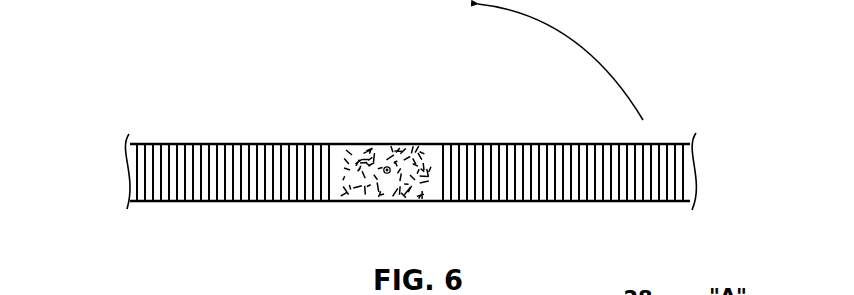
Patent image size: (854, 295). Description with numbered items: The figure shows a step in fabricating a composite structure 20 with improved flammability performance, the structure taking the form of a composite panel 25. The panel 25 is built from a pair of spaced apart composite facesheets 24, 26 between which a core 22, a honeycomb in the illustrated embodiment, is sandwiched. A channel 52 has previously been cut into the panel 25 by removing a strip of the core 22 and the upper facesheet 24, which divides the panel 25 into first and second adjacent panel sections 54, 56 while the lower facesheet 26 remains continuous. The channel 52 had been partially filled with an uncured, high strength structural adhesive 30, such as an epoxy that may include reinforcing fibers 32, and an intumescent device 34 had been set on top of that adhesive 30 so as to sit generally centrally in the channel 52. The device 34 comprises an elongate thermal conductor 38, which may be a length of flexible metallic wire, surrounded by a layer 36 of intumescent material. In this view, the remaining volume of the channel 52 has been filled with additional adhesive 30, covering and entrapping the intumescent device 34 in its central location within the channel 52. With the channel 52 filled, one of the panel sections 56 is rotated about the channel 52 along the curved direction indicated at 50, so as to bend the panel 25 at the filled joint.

The composite structure 20 is at (150, 126).
The core 22 is at (225, 172).
The composite facesheet 24 is at (497, 143).
The composite panel 25 is at (680, 77).
The composite facesheet 26 is at (594, 200).
The adhesive 30 is at (415, 185).
The reinforcing fibers 32 is at (357, 186).
The intumescent device 34 is at (384, 163).
The layer of intumescent material 36 is at (384, 168).
The elongate thermal conductor 38 is at (389, 166).
The direction of folding 50 is at (605, 60).
The channel 52 is at (423, 140).
The first panel section 54 is at (226, 130).
The second panel section 56 is at (558, 131).